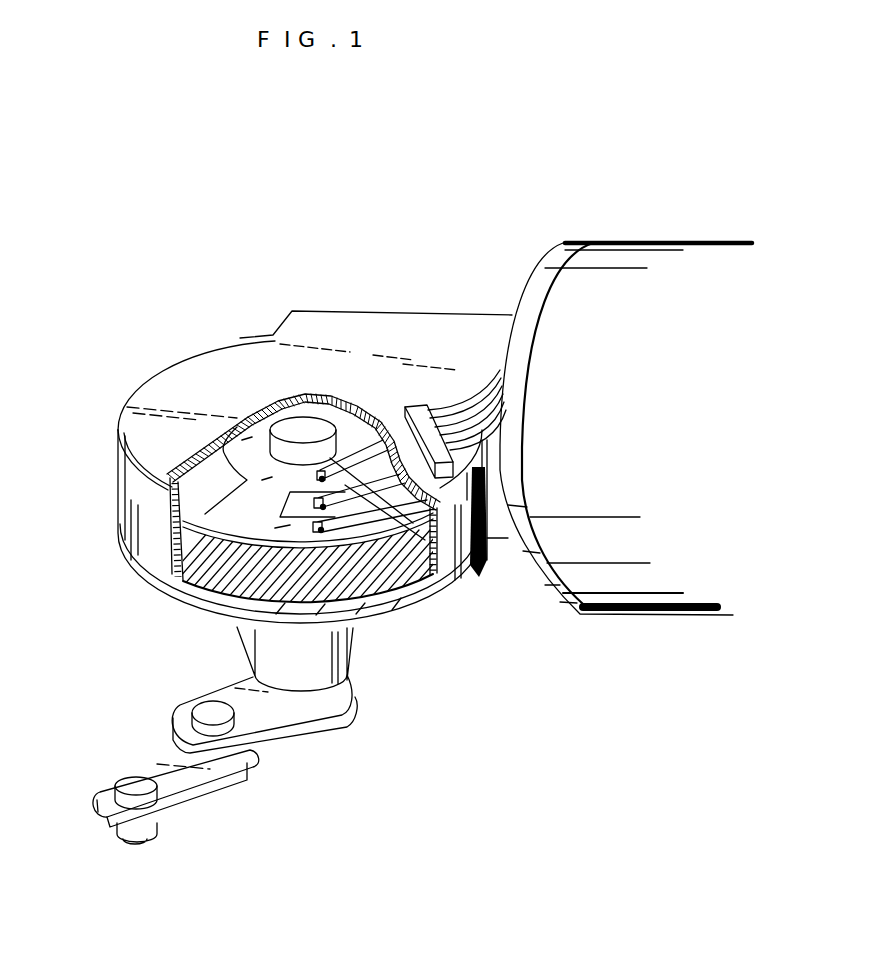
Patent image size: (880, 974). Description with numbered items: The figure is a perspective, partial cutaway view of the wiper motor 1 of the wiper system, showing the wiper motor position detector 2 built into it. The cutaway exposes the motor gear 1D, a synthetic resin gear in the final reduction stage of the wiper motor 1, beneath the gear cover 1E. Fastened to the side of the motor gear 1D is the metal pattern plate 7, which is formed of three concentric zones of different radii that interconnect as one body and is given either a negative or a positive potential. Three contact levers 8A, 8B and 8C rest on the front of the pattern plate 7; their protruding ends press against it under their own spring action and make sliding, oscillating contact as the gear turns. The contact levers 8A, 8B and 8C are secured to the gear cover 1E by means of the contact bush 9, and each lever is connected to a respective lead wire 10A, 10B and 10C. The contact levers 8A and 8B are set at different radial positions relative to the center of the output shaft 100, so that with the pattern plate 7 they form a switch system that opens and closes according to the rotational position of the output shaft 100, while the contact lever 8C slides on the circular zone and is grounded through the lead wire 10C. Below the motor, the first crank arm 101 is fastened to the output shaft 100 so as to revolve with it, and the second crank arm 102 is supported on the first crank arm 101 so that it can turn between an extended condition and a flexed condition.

The wiper motor 1 is at (617, 258).
The gear cover 1E is at (163, 380).
The motor gear 1D is at (190, 508).
The wiper motor position detector 2 is at (215, 580).
The pattern plate 7 is at (183, 552).
The contact lever 8A is at (402, 560).
The contact lever 8B is at (393, 562).
The contact lever 8C is at (437, 558).
The contact bush 9 is at (408, 408).
The lead wire 10A is at (446, 410).
The lead wire 10B is at (456, 412).
The lead wire 10C is at (437, 407).
The output shaft 100 is at (292, 420).
The first crank arm 101 is at (293, 730).
The second crank arm 102 is at (190, 800).